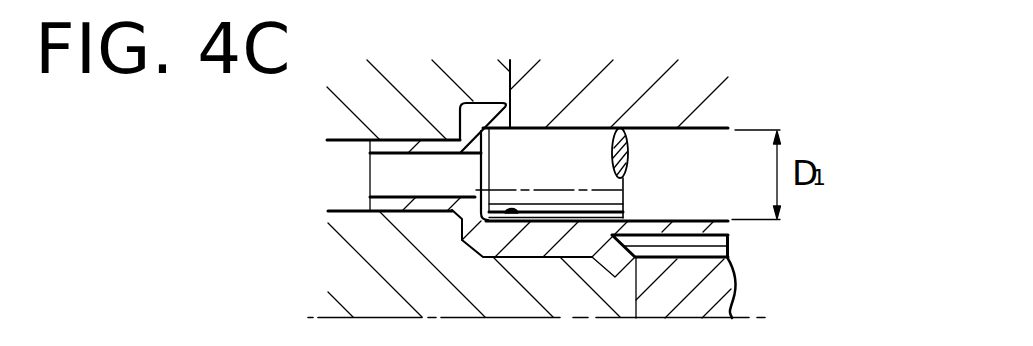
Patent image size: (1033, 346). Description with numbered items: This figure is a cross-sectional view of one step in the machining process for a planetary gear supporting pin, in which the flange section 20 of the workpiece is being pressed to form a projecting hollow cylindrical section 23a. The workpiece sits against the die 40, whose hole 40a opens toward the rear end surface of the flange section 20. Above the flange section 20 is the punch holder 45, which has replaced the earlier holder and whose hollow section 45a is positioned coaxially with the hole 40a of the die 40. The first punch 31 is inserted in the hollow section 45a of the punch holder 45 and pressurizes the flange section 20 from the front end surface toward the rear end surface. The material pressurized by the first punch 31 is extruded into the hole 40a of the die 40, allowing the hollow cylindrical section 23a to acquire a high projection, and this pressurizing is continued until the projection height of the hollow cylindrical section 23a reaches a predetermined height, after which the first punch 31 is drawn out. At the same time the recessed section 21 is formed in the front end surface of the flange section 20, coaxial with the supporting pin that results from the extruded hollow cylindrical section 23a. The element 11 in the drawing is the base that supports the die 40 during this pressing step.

The die 40 is at (335, 110).
The flange section 20 is at (483, 105).
The punch holder 45 is at (712, 102).
The hollow cylindrical section 23a is at (365, 150).
The first punch 31 is at (603, 183).
The hole of the die 40a is at (345, 208).
The recessed section 21 is at (516, 232).
The hollow section of the punch holder 45a is at (693, 216).
The base body 11 is at (715, 283).